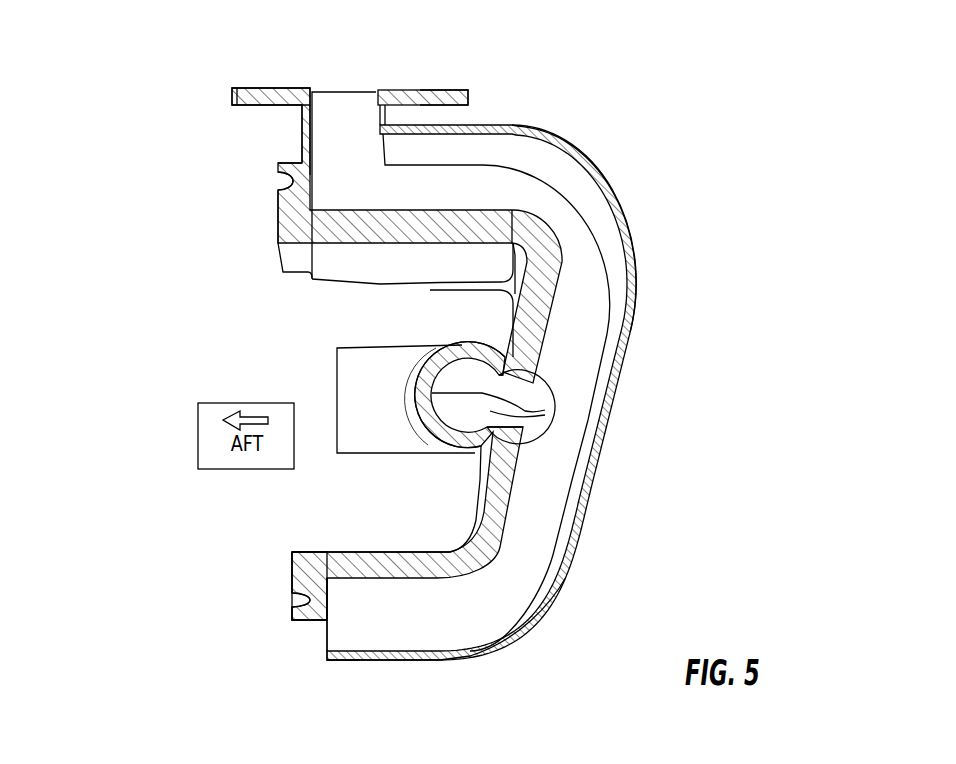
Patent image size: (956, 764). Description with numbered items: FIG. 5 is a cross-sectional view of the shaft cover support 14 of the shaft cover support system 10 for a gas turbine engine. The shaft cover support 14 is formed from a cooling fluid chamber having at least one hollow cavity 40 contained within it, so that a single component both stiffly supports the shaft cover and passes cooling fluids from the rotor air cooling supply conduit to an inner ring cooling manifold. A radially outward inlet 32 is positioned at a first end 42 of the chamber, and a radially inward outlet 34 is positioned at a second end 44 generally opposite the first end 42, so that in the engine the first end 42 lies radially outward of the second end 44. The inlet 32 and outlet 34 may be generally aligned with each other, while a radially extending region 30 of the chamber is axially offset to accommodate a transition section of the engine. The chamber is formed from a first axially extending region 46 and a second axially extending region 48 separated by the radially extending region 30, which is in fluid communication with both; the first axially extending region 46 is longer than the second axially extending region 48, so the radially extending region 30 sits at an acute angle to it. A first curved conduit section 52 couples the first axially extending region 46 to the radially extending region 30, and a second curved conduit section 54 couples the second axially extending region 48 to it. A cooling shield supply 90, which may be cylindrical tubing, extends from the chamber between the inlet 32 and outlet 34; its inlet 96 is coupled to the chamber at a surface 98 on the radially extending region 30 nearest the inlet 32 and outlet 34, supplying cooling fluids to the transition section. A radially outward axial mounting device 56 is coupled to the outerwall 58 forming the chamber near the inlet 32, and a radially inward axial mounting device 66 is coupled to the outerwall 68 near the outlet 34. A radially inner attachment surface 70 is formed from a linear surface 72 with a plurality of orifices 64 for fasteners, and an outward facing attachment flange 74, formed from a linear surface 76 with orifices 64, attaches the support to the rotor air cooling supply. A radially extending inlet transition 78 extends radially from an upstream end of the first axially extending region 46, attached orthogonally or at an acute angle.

The shaft cover support system 10 is at (718, 242).
The shaft cover support 14 is at (567, 577).
The radially extending region 30 is at (636, 282).
The radially outward inlet 32 is at (345, 92).
The radially inward outlet 34 is at (325, 640).
The hollow cavity 40 is at (432, 393).
The first end 42 is at (374, 92).
The second end 44 is at (325, 628).
The first axially extending region 46 is at (316, 280).
The second axially extending region 48 is at (292, 552).
The first curved conduit section 52 is at (614, 180).
The second curved conduit section 54 is at (508, 650).
The radially outward axial mounting device 56 is at (278, 224).
The outerwall 58 is at (278, 207).
The orifices 64 is at (290, 602).
The radially inward axial mounting device 66 is at (290, 568).
The outerwall 68 is at (292, 562).
The radially inner attachment surface 70 is at (292, 620).
The linear surface 72 is at (290, 583).
The outward facing attachment flange 74 is at (468, 97).
The linear surface 76 is at (281, 88).
The radially extending inlet transition 78 is at (207, 92).
The cooling shield supply 90 is at (470, 344).
The inlet 96 is at (525, 395).
The surface 98 is at (502, 332).